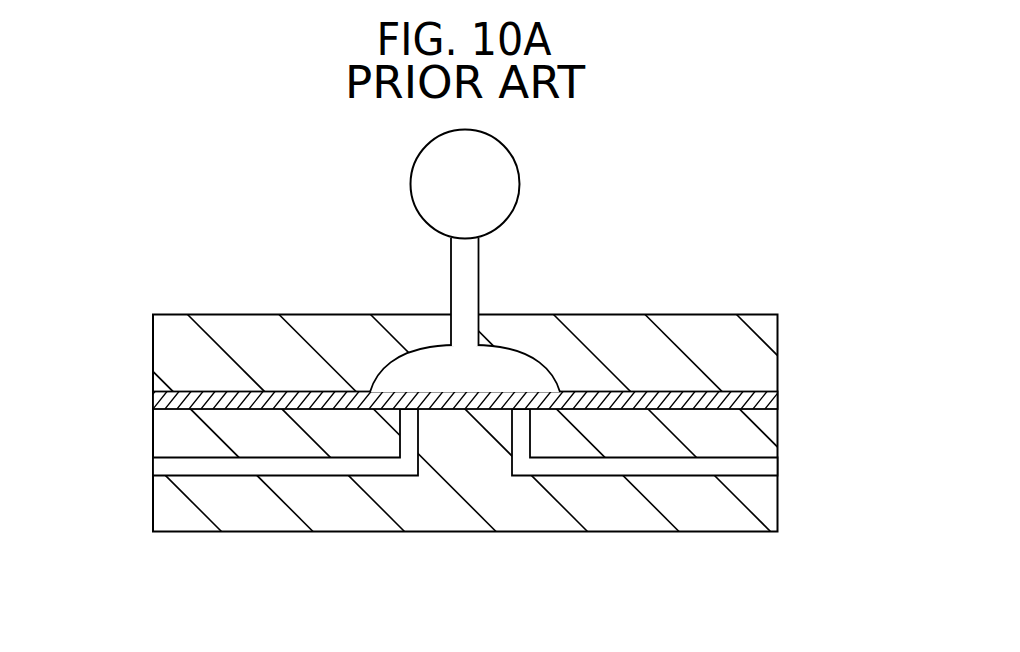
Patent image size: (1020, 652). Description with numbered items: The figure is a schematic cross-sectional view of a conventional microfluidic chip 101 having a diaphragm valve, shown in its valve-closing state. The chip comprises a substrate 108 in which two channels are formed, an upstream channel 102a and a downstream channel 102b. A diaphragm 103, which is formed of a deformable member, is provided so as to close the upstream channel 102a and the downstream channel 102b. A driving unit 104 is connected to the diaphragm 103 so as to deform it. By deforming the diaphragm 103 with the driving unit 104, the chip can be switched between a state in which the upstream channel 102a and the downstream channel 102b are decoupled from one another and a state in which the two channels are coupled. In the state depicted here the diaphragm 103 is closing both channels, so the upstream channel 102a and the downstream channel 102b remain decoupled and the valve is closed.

The microfluidic chip 101 is at (772, 278).
The upstream channel 102a is at (197, 467).
The downstream channel 102b is at (765, 467).
The diaphragm 103 is at (532, 397).
The driving unit 104 is at (497, 198).
The substrate 108 is at (249, 330).